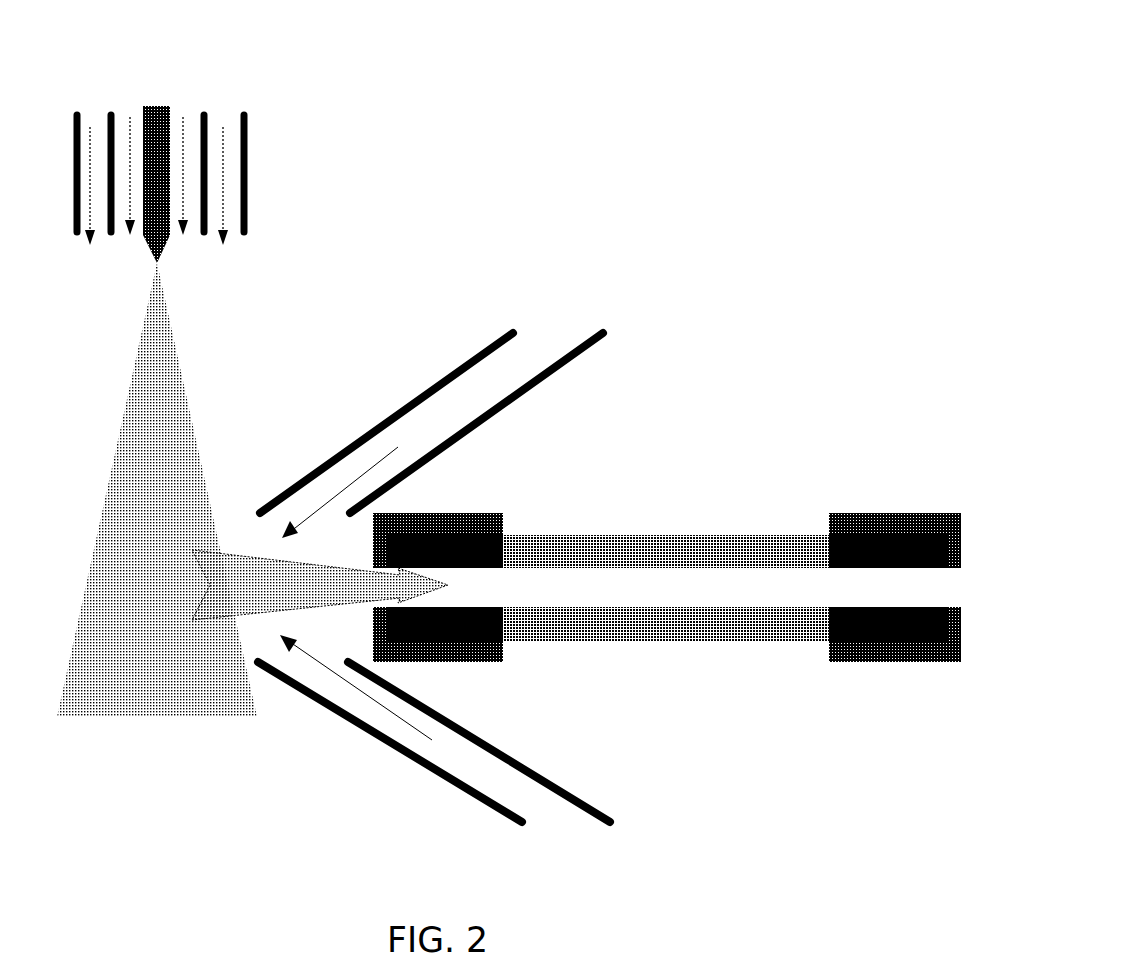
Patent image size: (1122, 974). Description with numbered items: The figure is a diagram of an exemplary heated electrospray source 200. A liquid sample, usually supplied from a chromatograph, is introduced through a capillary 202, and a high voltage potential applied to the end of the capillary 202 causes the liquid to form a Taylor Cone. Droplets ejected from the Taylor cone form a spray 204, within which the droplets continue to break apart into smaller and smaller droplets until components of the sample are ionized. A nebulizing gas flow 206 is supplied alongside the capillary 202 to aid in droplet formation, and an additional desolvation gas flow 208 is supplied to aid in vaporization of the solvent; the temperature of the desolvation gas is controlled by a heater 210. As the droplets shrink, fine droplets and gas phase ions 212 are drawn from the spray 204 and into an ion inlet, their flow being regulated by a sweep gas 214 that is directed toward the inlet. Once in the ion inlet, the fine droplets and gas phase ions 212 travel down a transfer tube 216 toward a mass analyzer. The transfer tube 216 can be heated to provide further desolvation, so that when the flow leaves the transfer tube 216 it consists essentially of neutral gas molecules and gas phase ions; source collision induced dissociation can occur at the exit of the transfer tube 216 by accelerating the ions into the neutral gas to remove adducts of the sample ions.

The heated electrospray source 200 is at (678, 152).
The capillary 202 is at (157, 106).
The spray 204 is at (172, 382).
The nebulizing gas flow 206 is at (130, 123).
The desolvation gas flow 208 is at (223, 172).
The heater 210 is at (247, 197).
The fine droplets and gas phase ions 212 is at (272, 590).
The sweep gas 214 is at (332, 673).
The transfer tube 216 is at (677, 537).